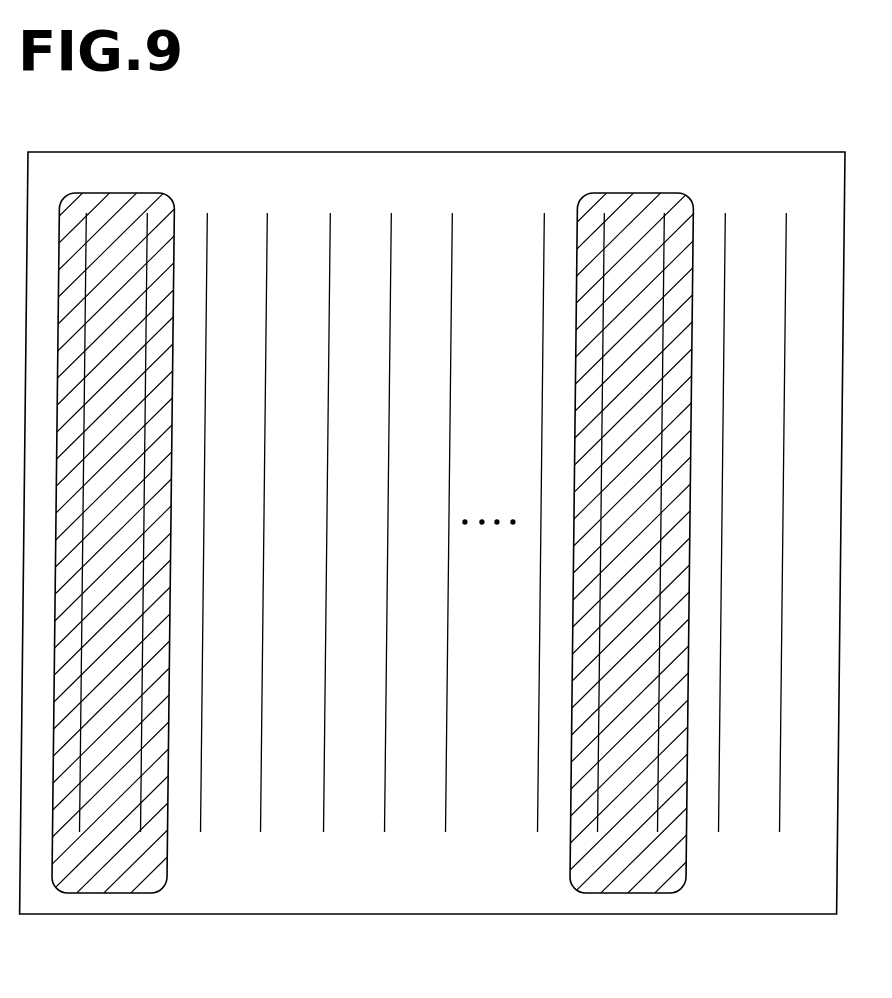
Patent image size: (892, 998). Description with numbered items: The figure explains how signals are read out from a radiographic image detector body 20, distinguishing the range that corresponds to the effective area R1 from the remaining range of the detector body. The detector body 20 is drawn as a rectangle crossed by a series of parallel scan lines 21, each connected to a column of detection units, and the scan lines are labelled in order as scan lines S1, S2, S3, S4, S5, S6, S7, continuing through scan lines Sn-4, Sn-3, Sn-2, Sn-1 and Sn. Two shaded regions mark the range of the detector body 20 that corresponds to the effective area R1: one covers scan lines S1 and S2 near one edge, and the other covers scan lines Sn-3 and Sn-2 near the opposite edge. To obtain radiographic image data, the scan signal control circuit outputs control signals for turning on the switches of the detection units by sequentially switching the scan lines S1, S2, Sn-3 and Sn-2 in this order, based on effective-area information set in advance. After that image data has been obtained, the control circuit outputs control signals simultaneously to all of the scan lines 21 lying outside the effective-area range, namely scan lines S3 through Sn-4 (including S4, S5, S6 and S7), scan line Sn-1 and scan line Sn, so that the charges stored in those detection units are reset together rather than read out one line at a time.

The radiographic image detector body 20 is at (501, 152).
The scan lines 21 is at (434, 489).
The effective area R1 is at (136, 893).
The scan line S1 is at (83, 541).
The scan line S2 is at (144, 541).
The scan line S3 is at (204, 541).
The scan line S4 is at (264, 541).
The scan line S5 is at (327, 541).
The scan line S6 is at (388, 541).
The scan line S7 is at (449, 541).
The scan line Sn-4 is at (548, 541).
The scan line Sn-3 is at (608, 541).
The scan line Sn-2 is at (668, 541).
The scan line Sn-1 is at (729, 541).
The scan line Sn is at (783, 541).